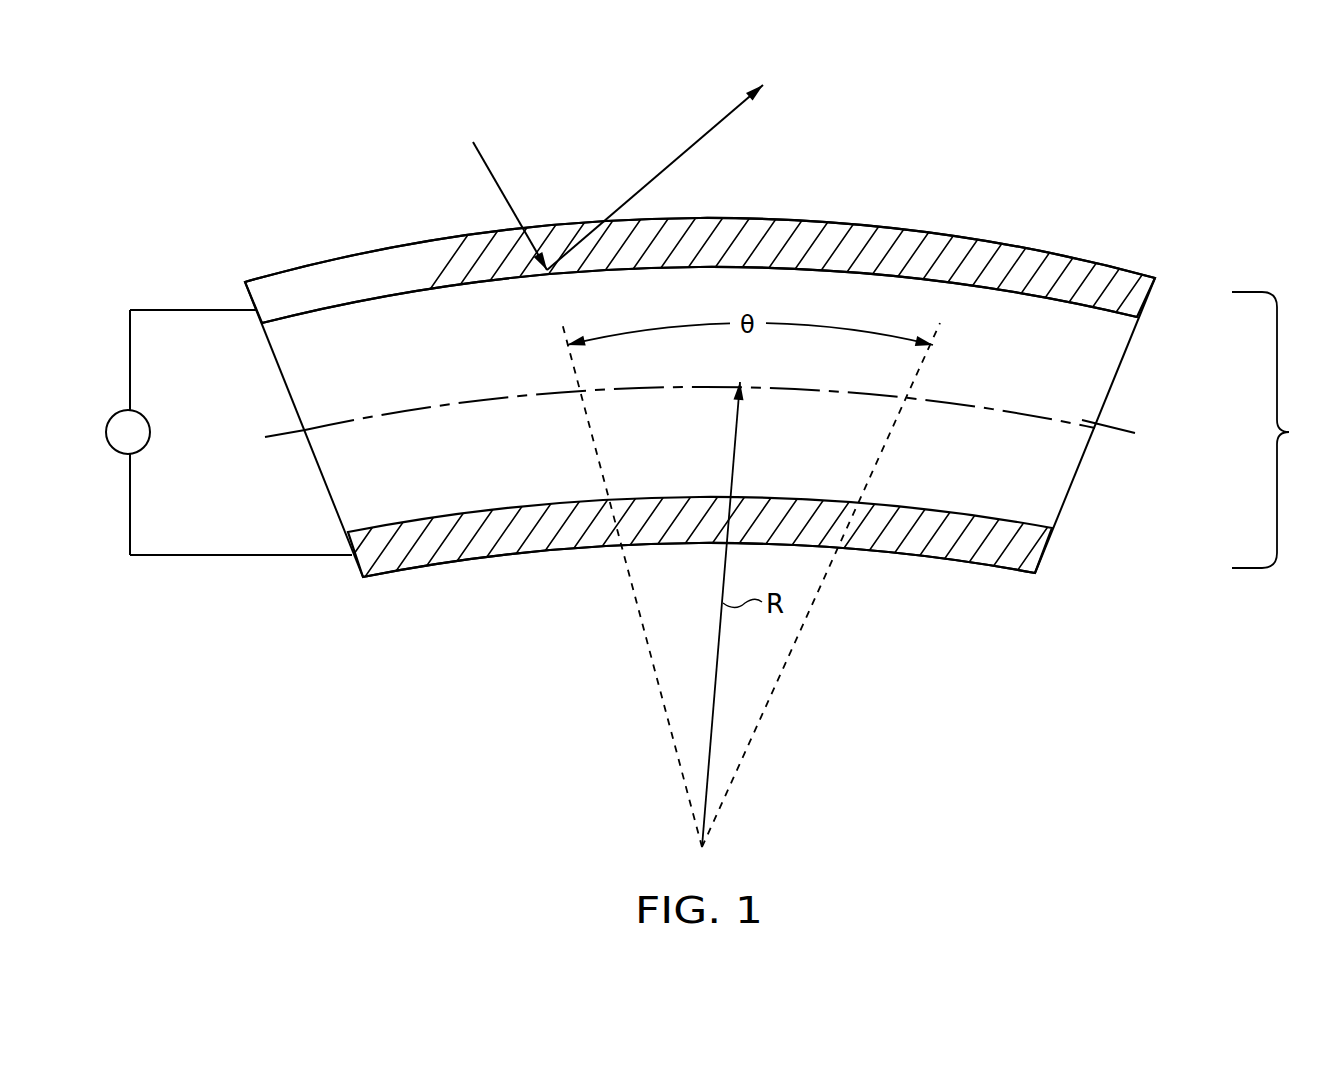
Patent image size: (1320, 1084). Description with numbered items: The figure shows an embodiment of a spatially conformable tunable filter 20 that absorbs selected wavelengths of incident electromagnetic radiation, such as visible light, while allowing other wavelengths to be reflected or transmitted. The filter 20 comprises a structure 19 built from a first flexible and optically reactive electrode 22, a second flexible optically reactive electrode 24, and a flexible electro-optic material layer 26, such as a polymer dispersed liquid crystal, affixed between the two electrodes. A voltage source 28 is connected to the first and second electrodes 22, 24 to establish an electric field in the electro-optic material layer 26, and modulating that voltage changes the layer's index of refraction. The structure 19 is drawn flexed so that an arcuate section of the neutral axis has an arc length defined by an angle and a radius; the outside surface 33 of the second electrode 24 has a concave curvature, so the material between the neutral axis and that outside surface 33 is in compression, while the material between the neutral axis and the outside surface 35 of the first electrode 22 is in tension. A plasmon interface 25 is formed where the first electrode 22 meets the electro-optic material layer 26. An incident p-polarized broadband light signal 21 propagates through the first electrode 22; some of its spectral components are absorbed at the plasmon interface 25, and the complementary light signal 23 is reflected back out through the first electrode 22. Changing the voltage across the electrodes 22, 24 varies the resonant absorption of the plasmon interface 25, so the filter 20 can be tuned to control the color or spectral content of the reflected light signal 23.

The structure 19 is at (1276, 430).
The spatially conformable tunable filter 20 is at (965, 150).
The incident light signal 21 is at (490, 170).
The first flexible optically reactive electrode 22 is at (1145, 308).
The reflected light signal 23 is at (668, 165).
The second flexible optically reactive electrode 24 is at (1030, 552).
The plasmon interface 25 is at (977, 293).
The flexible electro-optic material layer 26 is at (1095, 362).
The voltage source 28 is at (150, 425).
The outside surface of the second electrode 33 is at (470, 578).
The outside surface of the first electrode 35 is at (338, 260).